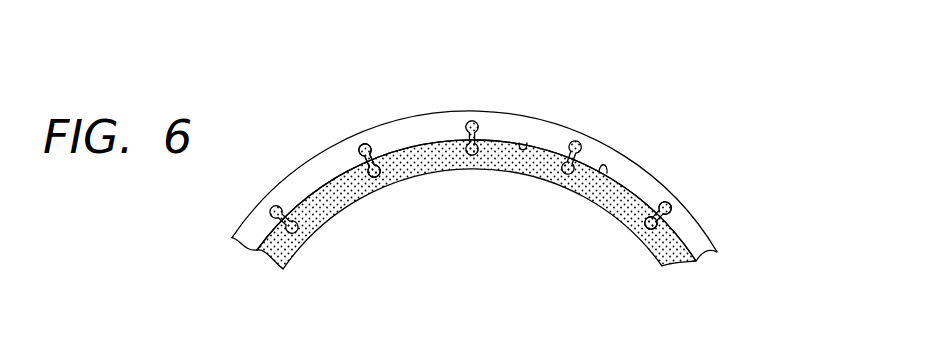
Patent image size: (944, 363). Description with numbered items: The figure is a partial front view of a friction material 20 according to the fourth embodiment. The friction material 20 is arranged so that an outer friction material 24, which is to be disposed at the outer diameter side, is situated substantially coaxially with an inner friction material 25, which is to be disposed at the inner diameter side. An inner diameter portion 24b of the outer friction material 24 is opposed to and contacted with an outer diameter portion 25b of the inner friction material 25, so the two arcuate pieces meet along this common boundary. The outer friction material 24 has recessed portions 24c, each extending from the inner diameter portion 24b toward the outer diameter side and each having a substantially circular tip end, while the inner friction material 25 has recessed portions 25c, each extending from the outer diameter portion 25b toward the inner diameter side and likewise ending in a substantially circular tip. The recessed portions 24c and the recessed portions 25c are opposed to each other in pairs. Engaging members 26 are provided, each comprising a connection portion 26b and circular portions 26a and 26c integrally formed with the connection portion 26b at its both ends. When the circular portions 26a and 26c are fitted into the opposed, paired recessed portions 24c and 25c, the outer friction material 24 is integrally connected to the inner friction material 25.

The friction material 20 is at (658, 110).
The outer friction material 24 is at (292, 190).
The inner diameter portion 24b is at (524, 142).
The recessed portions 24c is at (359, 150).
The inner friction material 25 is at (335, 197).
The outer diameter portion 25b is at (600, 173).
The recessed portions 25c is at (380, 176).
The engaging members 26 is at (466, 128).
The circular portion 26a is at (672, 209).
The connection portion 26b is at (668, 221).
The circular portion 26c is at (655, 230).